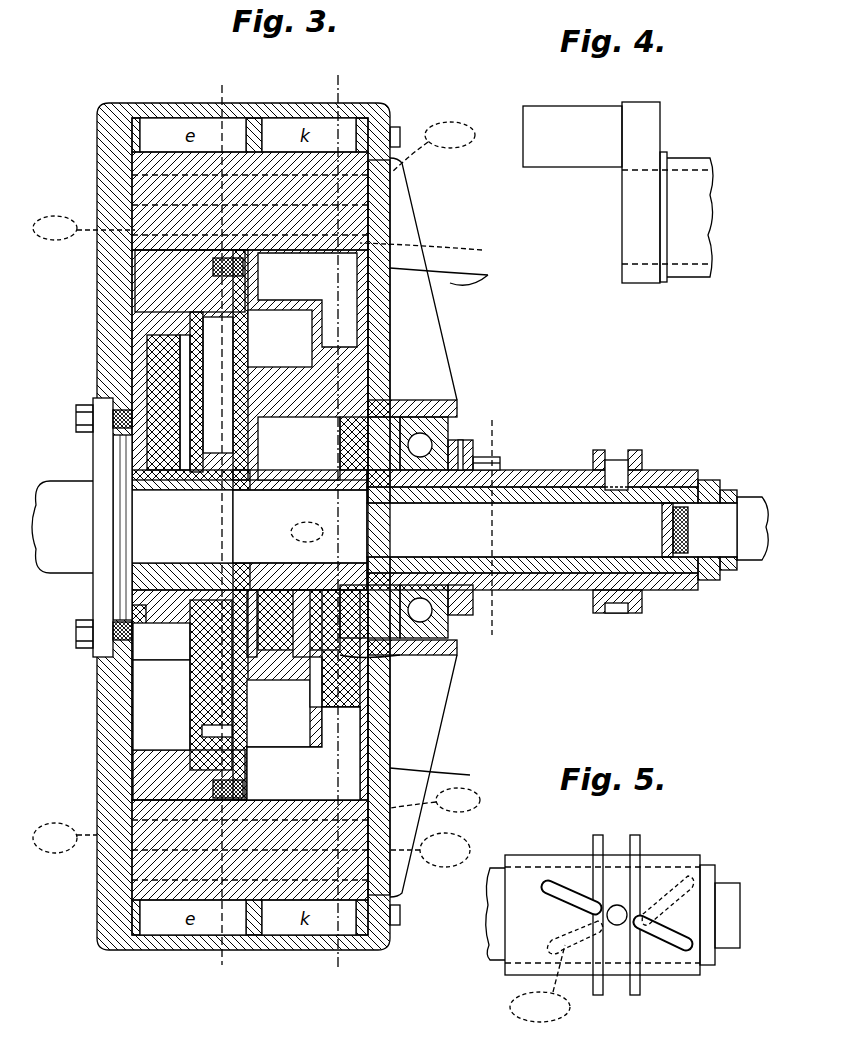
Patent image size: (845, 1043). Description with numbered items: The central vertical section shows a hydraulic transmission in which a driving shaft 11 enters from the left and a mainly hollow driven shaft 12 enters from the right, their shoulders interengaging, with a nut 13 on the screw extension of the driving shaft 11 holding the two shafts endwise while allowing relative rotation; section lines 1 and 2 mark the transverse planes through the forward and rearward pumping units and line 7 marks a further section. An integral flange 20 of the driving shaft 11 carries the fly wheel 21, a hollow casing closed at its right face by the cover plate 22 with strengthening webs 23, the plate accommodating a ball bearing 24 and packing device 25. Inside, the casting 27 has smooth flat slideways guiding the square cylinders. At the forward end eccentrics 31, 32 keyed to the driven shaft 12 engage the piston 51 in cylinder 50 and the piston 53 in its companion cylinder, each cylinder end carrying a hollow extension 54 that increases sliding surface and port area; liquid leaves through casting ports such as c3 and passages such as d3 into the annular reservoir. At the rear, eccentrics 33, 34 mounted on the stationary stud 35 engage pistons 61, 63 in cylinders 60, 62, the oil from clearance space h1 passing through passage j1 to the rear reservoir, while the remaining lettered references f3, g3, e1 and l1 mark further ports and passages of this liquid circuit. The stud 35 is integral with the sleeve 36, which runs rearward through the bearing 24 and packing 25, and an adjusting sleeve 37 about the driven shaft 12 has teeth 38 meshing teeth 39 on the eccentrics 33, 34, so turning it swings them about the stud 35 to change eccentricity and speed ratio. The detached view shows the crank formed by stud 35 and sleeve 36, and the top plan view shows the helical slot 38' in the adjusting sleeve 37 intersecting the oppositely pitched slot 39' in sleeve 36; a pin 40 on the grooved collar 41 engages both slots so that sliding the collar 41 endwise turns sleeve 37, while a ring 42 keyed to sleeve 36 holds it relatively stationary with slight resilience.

In FIG. 3, the section line 1- 1 is at (326, 70).
In FIG. 3, the section line 2- 2 is at (212, 82).
In FIG. 3, the section line 7- 7 is at (486, 529).
In FIG. 3, the driving shaft 11 is at (30, 492).
In FIG. 3, the driven shaft 12 is at (210, 500).
In FIG. 5, the driven shaft 12 is at (735, 900).
In FIG. 3, the nut 13 is at (705, 478).
In FIG. 3, the flange 20 is at (100, 597).
In FIG. 3, the fly wheel 21 is at (143, 102).
In FIG. 3, the cover plate 22 is at (392, 205).
In FIG. 3, the strengthening webs 23 is at (415, 240).
In FIG. 3, the ball bearing 24 is at (422, 440).
In FIG. 3, the packing device 25 is at (460, 445).
In FIG. 3, the casting 27 is at (135, 183).
In FIG. 3, the eccentric 31 is at (146, 366).
In FIG. 3, the eccentric 32 is at (210, 662).
In FIG. 3, the eccentric 33 is at (262, 565).
In FIG. 3, the eccentric 34 is at (360, 640).
In FIG. 3, the stationary stud 35 is at (293, 537).
In FIG. 4, the stationary stud 35 is at (572, 136).
In FIG. 3, the sleeve 36 is at (548, 470).
In FIG. 4, the sleeve 36 is at (690, 217).
In FIG. 5, the sleeve 36 is at (602, 915).
In FIG. 3, the adjusting sleeve 37 is at (575, 470).
In FIG. 5, the adjusting sleeve 37 is at (495, 915).
In FIG. 3, the teeth 38 is at (629, 530).
In FIG. 3, the teeth 39 is at (307, 541).
In FIG. 3, the slot 39' is at (651, 458).
In FIG. 5, the slot 39' is at (612, 888).
In FIG. 5, the helical slot 38' is at (540, 983).
In FIG. 3, the pin 40 is at (620, 462).
In FIG. 5, the pin 40 is at (620, 910).
In FIG. 3, the grooved collar 41 is at (640, 455).
In FIG. 5, the grooved collar 41 is at (620, 840).
In FIG. 3, the ring 42 is at (490, 458).
In FIG. 3, the cylinder 50 is at (190, 697).
In FIG. 3, the piston 51 is at (161, 641).
In FIG. 3, the piston 53 is at (150, 340).
In FIG. 3, the extension 54 is at (70, 782).
In FIG. 3, the cylinder 60 is at (312, 333).
In FIG. 3, the piston 61 is at (392, 350).
In FIG. 3, the cylinder 62 is at (275, 680).
In FIG. 3, the piston 63 is at (292, 680).
In FIG. 3, the port c3 is at (84, 228).
In FIG. 3, the passage d3 is at (433, 147).
In FIG. 3, the passage f3 is at (429, 244).
In FIG. 3, the passage g3 is at (450, 272).
In FIG. 3, the clearance space h1 is at (441, 769).
In FIG. 3, the port e1 is at (435, 800).
In FIG. 3, the passage j1 is at (430, 850).
In FIG. 3, the port l1 is at (65, 838).